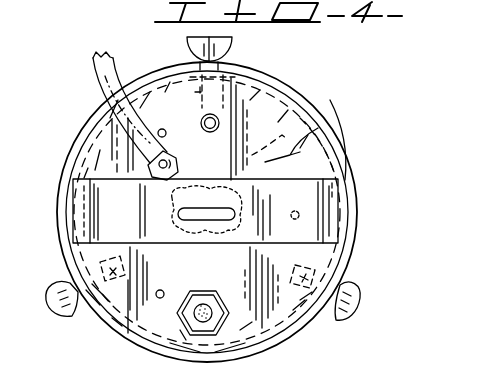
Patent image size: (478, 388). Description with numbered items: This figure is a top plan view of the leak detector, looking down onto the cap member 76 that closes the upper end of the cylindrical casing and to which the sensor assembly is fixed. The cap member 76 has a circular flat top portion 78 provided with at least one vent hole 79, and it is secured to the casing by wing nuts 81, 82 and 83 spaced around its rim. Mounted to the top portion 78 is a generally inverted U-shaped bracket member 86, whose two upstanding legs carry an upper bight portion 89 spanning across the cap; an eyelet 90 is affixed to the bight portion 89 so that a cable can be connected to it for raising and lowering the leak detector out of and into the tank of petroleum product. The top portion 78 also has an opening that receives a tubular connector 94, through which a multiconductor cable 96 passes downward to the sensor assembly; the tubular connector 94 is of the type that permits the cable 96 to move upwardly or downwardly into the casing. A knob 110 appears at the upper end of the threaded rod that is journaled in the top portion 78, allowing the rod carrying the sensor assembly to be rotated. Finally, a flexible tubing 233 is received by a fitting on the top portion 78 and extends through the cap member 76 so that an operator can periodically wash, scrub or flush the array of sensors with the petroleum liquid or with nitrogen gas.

The cap member 76 is at (356, 184).
The circular flat top portion 78 is at (318, 128).
The vent hole 79 is at (219, 120).
The wing nut 81 is at (68, 314).
The wing nut 82 is at (346, 314).
The wing nut 83 is at (232, 46).
The inverted U-shaped bracket member 86 is at (346, 156).
The upper bight portion 89 is at (120, 232).
The eyelet 90 is at (216, 228).
The tubular connector 94 is at (190, 336).
The multiconductor cable 96 is at (212, 318).
The knob 110 is at (340, 141).
The tubing 233 is at (106, 94).